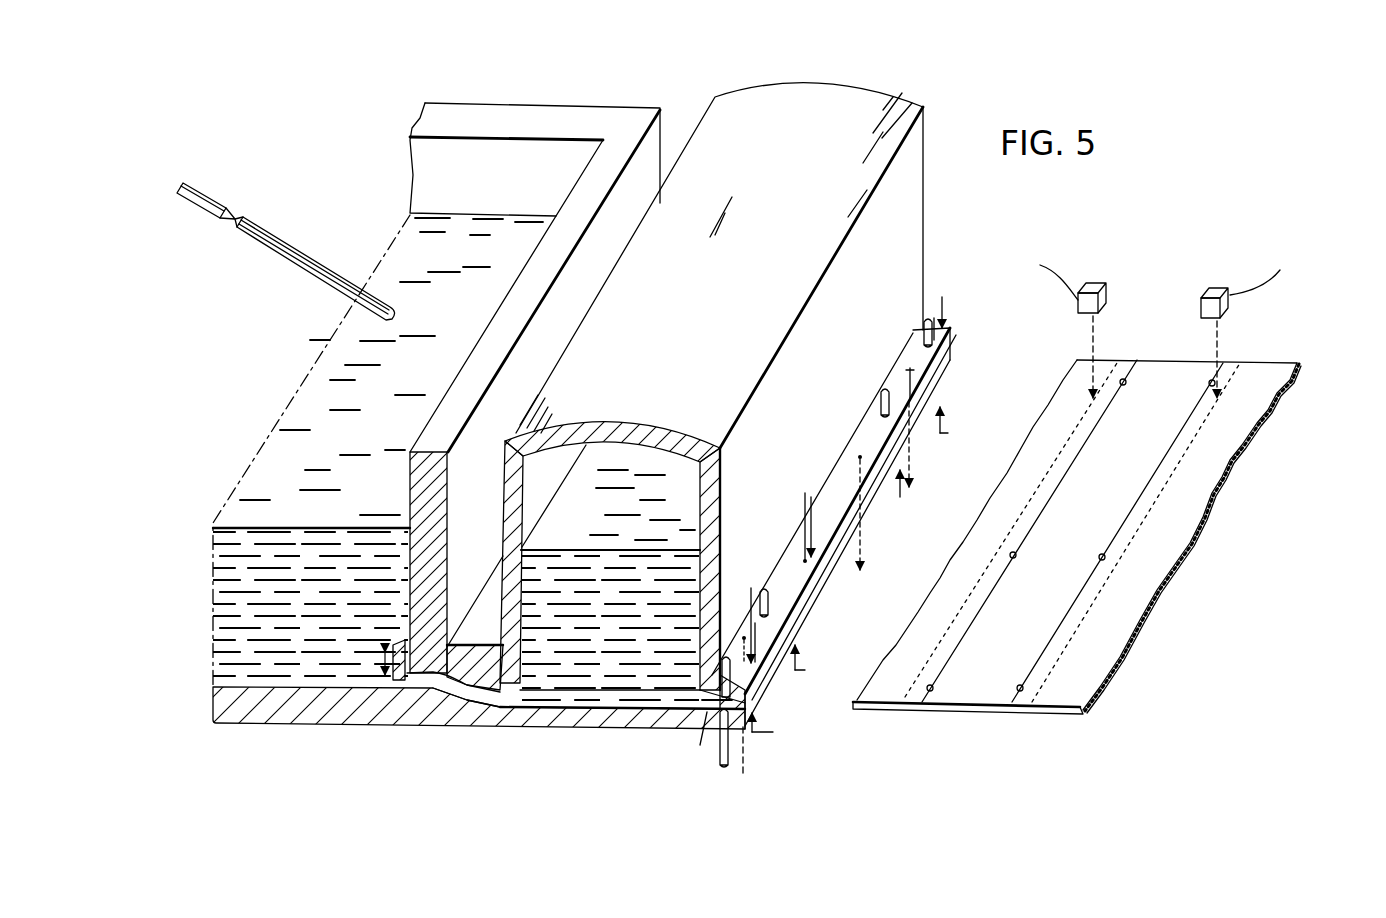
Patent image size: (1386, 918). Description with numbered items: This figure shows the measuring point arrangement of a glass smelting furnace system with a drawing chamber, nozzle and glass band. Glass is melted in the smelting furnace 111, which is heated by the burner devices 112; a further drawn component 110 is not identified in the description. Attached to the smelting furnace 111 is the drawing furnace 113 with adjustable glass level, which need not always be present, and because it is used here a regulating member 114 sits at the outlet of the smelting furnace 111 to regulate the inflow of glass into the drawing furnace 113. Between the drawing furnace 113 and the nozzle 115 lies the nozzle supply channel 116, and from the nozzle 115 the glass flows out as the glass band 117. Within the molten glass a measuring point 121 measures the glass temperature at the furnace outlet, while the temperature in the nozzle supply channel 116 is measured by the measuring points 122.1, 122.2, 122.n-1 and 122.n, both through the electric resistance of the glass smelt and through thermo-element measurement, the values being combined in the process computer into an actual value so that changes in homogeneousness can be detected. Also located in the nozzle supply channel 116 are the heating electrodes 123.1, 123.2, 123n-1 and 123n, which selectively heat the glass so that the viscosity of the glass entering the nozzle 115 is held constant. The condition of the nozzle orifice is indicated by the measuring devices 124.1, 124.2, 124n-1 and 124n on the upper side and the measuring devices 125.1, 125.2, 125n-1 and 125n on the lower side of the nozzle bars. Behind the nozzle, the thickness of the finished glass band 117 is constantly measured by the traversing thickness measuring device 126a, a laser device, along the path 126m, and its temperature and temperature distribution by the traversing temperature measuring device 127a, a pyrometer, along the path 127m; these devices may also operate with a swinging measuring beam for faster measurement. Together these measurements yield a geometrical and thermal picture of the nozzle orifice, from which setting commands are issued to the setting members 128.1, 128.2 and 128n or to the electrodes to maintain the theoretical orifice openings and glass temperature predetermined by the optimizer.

The melt bath 110 is at (308, 637).
The smelting furnace 111 is at (425, 262).
The burner devices 112 is at (268, 240).
The drawing furnace 113 is at (613, 487).
The regulating member 114 is at (402, 678).
The nozzle 115 is at (950, 358).
The nozzle supply channel 116 is at (708, 695).
The glass band 117 is at (1174, 370).
The measuring point 121 is at (527, 704).
The measuring point 122.1 is at (700, 745).
The measuring point 122.2 is at (745, 765).
The measuring point 122.n-1 is at (870, 528).
The measuring point 122.n is at (939, 444).
The heating electrode 123.1 is at (729, 755).
The heating electrode 123.2 is at (764, 587).
The heating electrode 123n-1 is at (881, 400).
The heating electrode 123n is at (922, 326).
The measuring device 124.1 is at (757, 624).
The measuring device 124.2 is at (811, 530).
The measuring device 124n-1 is at (905, 395).
The measuring device 124n is at (944, 318).
The measuring device 125.1 is at (788, 726).
The measuring device 125.2 is at (824, 660).
The measuring device 125n-1 is at (906, 497).
The measuring device 125n is at (965, 424).
The thickness measuring device 126a is at (1093, 285).
The path of the measuring probe 126m is at (1121, 378).
The temperature measuring device 127a is at (1217, 290).
The path of the measuring probe 127m is at (1211, 382).
The setting member 128.1 is at (751, 592).
The setting member 128.2 is at (806, 503).
The setting member 128n is at (934, 318).